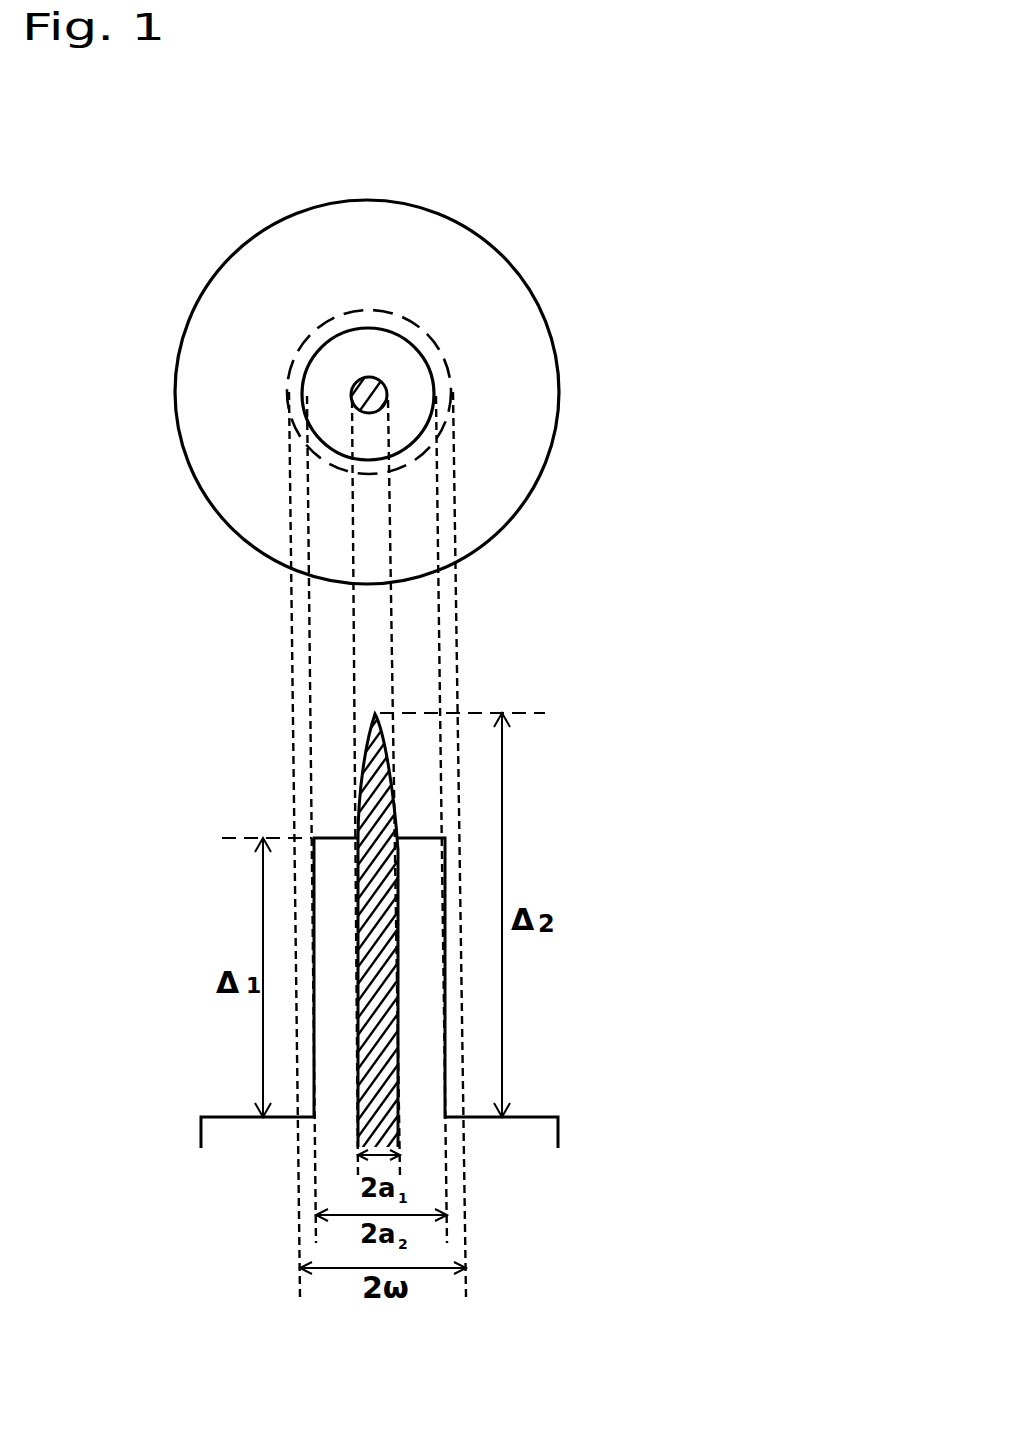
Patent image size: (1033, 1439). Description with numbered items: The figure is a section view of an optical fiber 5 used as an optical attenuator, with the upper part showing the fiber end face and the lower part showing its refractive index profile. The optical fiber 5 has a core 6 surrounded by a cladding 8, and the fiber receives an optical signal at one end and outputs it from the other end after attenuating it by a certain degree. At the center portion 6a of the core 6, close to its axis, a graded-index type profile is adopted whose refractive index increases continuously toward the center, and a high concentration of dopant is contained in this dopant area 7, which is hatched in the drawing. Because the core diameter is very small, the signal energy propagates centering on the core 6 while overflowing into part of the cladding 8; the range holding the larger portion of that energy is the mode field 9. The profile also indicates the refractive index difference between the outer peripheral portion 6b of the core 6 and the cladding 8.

The optical fiber 5 is at (548, 294).
The core 6 is at (417, 398).
The center portion 6a is at (363, 378).
The outer peripheral portion 6b is at (372, 357).
The dopant area 7 is at (377, 412).
The cladding 8 is at (502, 463).
The mode field 9 is at (416, 324).